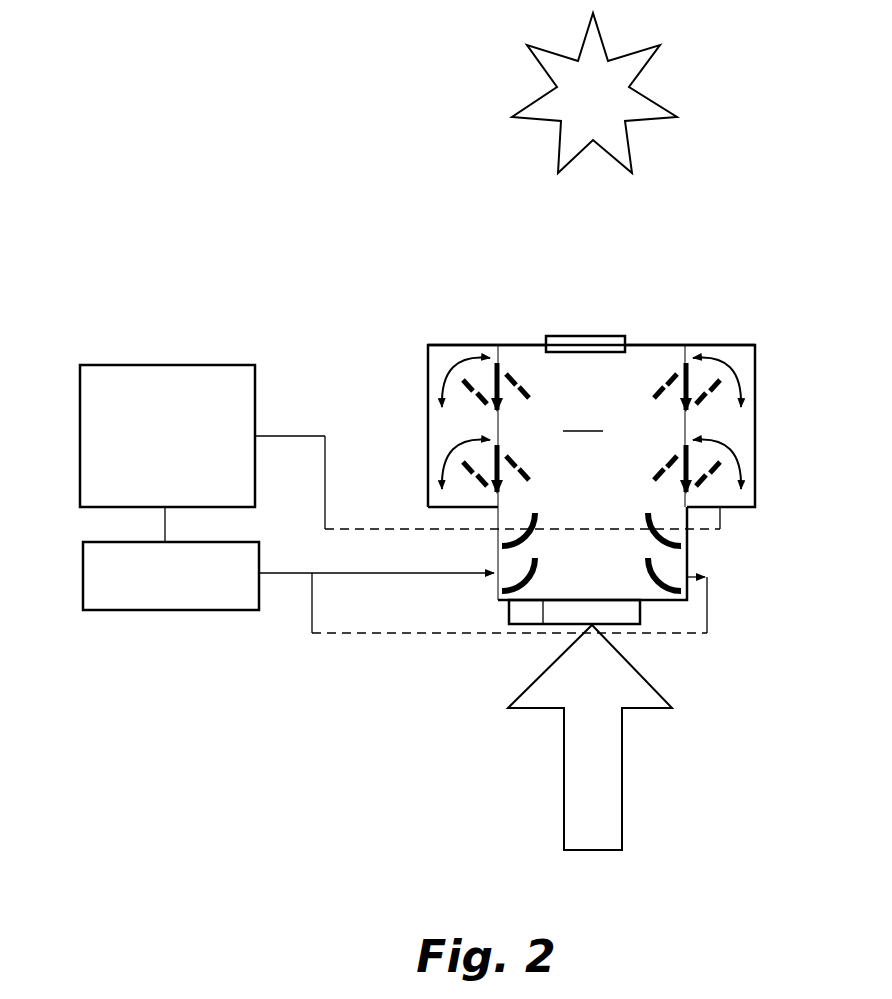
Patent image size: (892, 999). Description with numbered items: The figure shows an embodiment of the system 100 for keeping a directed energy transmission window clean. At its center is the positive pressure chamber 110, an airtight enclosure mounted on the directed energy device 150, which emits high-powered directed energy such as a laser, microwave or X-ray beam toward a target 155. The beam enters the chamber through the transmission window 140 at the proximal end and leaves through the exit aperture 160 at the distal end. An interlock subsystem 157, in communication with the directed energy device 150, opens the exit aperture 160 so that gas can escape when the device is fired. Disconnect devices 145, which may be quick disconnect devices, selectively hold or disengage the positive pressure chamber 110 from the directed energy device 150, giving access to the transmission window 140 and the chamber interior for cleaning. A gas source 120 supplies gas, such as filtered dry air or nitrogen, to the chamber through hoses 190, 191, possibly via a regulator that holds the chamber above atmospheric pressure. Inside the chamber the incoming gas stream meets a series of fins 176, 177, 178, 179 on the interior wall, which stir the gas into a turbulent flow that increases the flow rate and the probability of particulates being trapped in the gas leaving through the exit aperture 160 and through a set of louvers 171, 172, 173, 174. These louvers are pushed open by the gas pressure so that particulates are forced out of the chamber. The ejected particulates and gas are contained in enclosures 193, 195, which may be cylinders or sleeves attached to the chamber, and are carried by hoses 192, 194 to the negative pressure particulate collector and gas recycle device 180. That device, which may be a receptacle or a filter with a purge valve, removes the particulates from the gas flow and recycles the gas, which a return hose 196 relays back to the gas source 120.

The system 100 is at (193, 240).
The positive pressure chamber 110 is at (591, 428).
The gas source 120 is at (80, 583).
The transmission window 140 is at (649, 630).
The disconnect devices 145 is at (643, 601).
The directed energy device 150 is at (558, 802).
The target 155 is at (545, 80).
The interlock subsystem 157 is at (523, 630).
The exit aperture 160 is at (620, 338).
The louver 171 is at (477, 458).
The louver 172 is at (477, 377).
The louver 173 is at (698, 458).
The louver 174 is at (698, 376).
The fin 176 is at (505, 535).
The fin 177 is at (520, 565).
The fin 178 is at (654, 570).
The fin 179 is at (668, 523).
The particulate collector and gas recycle device 180 is at (128, 362).
The hose 190 is at (388, 568).
The hose 191 is at (432, 640).
The hose 192 is at (295, 431).
The enclosure 193 is at (452, 342).
The hose 194 is at (321, 520).
The enclosure 195 is at (715, 344).
The return hose 196 is at (158, 523).